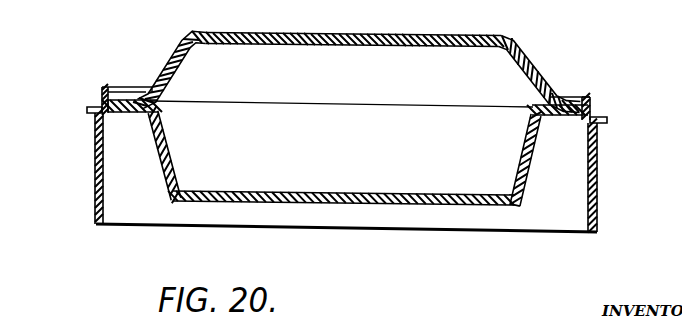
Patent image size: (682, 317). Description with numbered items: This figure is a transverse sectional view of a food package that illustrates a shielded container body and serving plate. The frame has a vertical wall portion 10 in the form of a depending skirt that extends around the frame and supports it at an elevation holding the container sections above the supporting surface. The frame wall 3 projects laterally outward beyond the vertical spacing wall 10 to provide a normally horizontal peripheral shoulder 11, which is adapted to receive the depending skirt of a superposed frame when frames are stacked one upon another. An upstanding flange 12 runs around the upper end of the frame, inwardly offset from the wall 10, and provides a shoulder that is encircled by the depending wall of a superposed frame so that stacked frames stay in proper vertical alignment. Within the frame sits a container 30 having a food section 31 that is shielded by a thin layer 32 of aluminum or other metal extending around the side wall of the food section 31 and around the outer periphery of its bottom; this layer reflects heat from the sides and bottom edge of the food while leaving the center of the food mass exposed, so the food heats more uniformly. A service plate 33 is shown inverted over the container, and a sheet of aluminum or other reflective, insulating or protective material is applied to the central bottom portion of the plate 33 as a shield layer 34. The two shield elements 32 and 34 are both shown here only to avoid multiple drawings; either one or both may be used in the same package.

The frame wall 3 is at (132, 108).
The vertical wall portion 10 is at (95, 146).
The peripheral shoulder 11 is at (602, 114).
The upstanding flange 12 is at (595, 98).
The container 30 is at (88, 199).
The food section 31 is at (318, 191).
The shielding layer 32 is at (520, 187).
The service plate 33 is at (170, 53).
The shield layer 34 is at (352, 32).